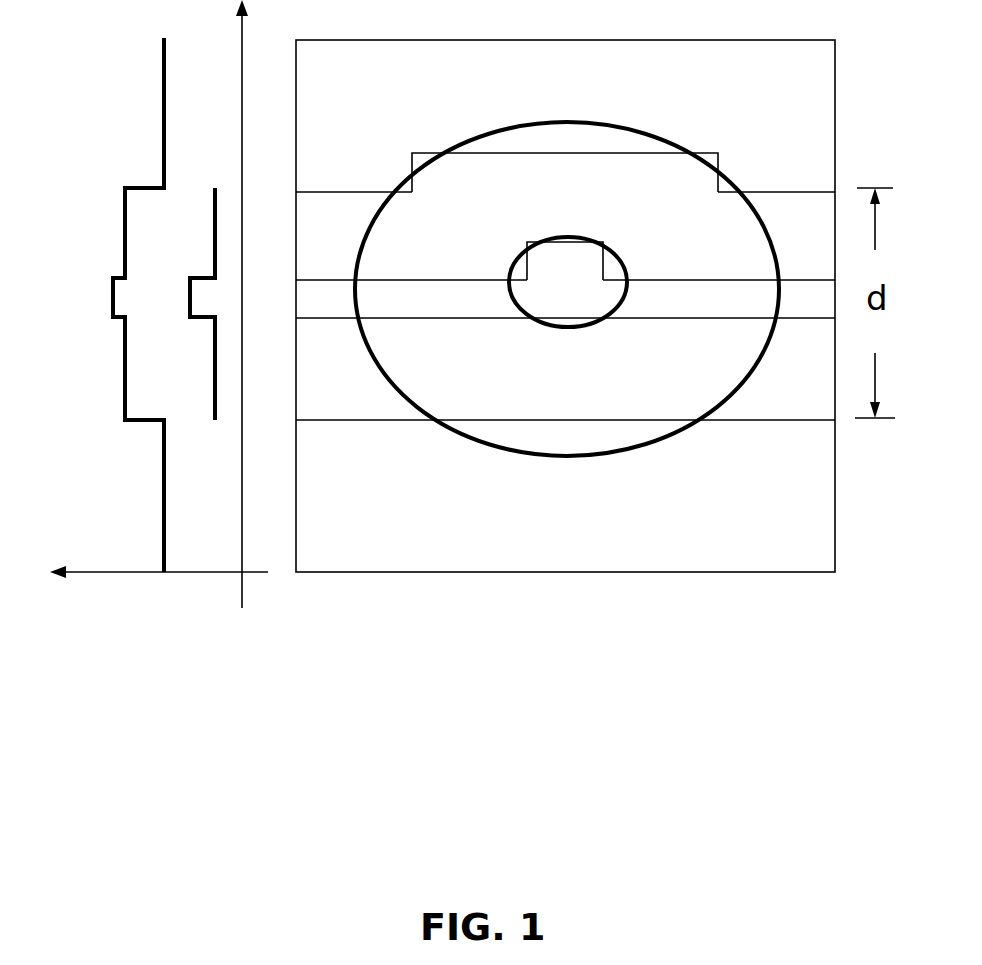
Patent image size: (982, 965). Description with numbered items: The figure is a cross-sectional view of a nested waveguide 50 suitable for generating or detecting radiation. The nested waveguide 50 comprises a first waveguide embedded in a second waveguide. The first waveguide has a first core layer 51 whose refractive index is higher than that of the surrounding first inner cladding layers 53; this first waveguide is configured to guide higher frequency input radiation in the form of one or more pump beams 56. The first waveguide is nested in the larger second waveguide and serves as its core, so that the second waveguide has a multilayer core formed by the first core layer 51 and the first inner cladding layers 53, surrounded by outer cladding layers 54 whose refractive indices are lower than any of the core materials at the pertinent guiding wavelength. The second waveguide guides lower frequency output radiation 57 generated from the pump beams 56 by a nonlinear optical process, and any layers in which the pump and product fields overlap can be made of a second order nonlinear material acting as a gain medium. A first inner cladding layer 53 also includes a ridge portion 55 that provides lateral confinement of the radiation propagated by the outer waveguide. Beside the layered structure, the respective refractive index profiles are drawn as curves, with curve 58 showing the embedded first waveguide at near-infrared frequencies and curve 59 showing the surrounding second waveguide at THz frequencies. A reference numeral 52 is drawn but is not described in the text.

The nested waveguide 50 is at (565, 364).
The first core layer 51 is at (718, 309).
The inner step notch 52 is at (600, 240).
The first inner cladding layers 53 is at (813, 230).
The outer cladding layers 54 is at (813, 117).
The ridge portion 55 is at (418, 152).
The pump beams 56 is at (555, 305).
The output radiation 57 is at (612, 400).
The refractive index profile curve of first waveguide 58 is at (215, 233).
The refractive index profile curve of second waveguide 59 is at (147, 187).